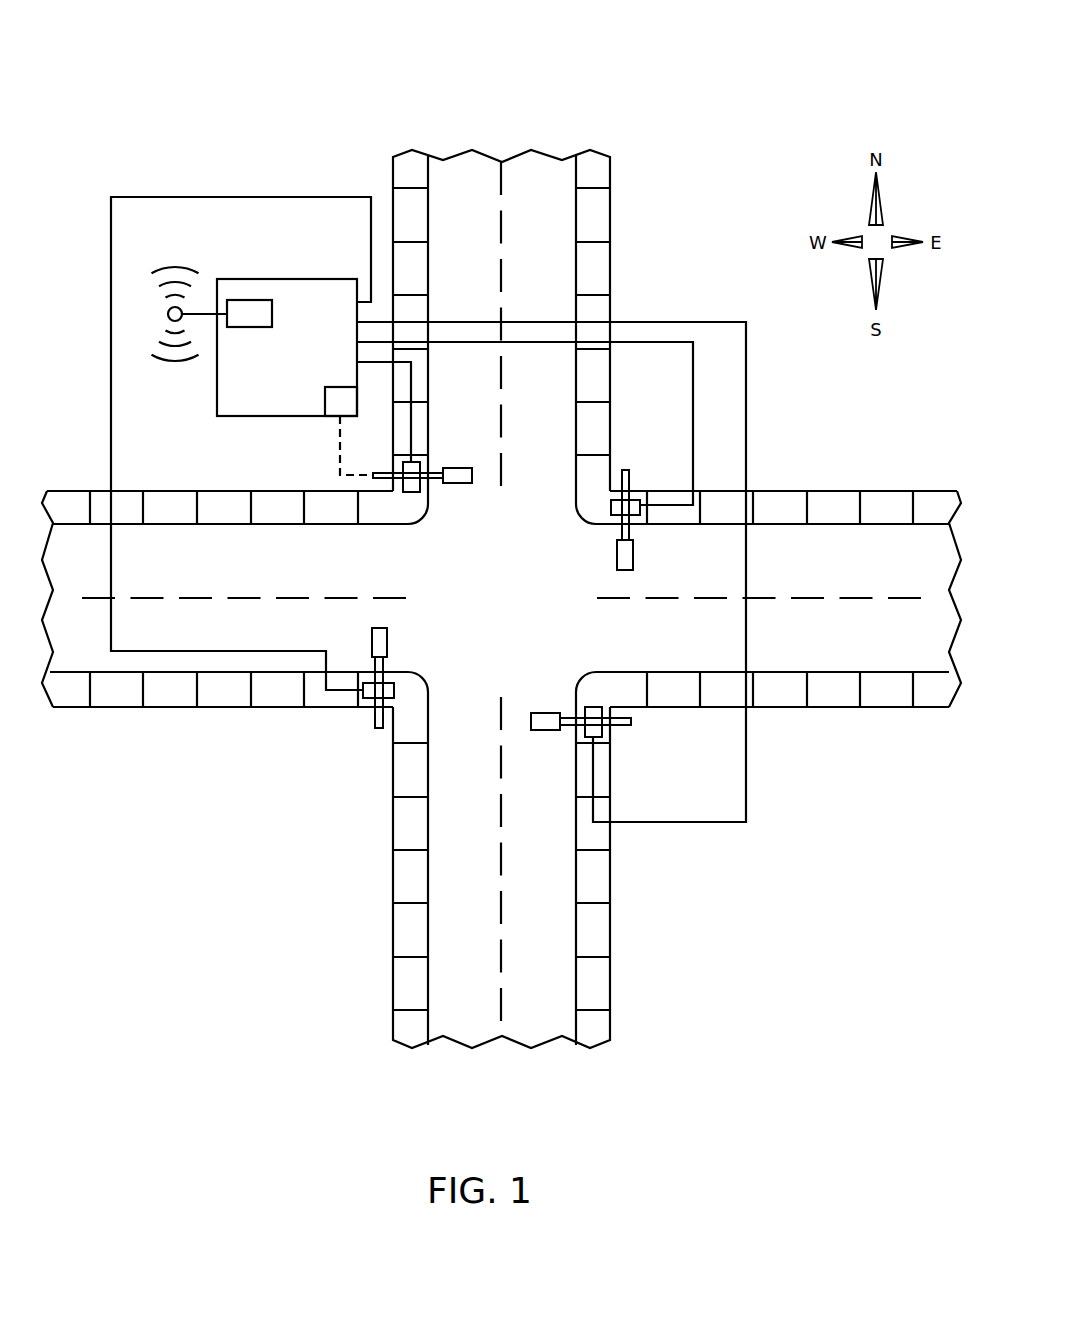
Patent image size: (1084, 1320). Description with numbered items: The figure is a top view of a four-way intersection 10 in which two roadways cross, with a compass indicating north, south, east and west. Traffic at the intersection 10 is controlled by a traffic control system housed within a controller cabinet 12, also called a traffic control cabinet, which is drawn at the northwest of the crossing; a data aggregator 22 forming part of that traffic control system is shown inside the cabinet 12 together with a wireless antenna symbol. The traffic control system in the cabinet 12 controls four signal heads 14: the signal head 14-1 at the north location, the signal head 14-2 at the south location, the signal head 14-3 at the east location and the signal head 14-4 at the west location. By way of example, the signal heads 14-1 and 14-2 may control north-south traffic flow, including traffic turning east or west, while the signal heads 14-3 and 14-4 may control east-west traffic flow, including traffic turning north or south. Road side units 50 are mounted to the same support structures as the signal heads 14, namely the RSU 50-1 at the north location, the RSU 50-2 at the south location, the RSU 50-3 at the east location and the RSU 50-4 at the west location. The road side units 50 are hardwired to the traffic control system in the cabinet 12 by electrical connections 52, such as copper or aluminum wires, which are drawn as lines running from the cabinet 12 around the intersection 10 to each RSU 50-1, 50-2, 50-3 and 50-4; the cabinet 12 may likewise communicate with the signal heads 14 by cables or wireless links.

The four-way intersection 10 is at (501, 541).
The controller cabinet 12 is at (283, 279).
The data aggregator 22 is at (247, 300).
The signal heads 14 is at (501, 597).
The signal head at the north location 14-1 is at (465, 484).
The signal head at the south location 14-2 is at (537, 713).
The signal head at the east location 14-3 is at (633, 555).
The signal head at the west location 14-4 is at (370, 643).
The road side units 50 is at (509, 609).
The RSU at the north location 50-1 is at (411, 492).
The RSU at the south location 50-2 is at (593, 707).
The RSU at the east location 50-3 is at (611, 503).
The RSU at the west location 50-4 is at (394, 690).
The electrical connections 52 is at (111, 293).